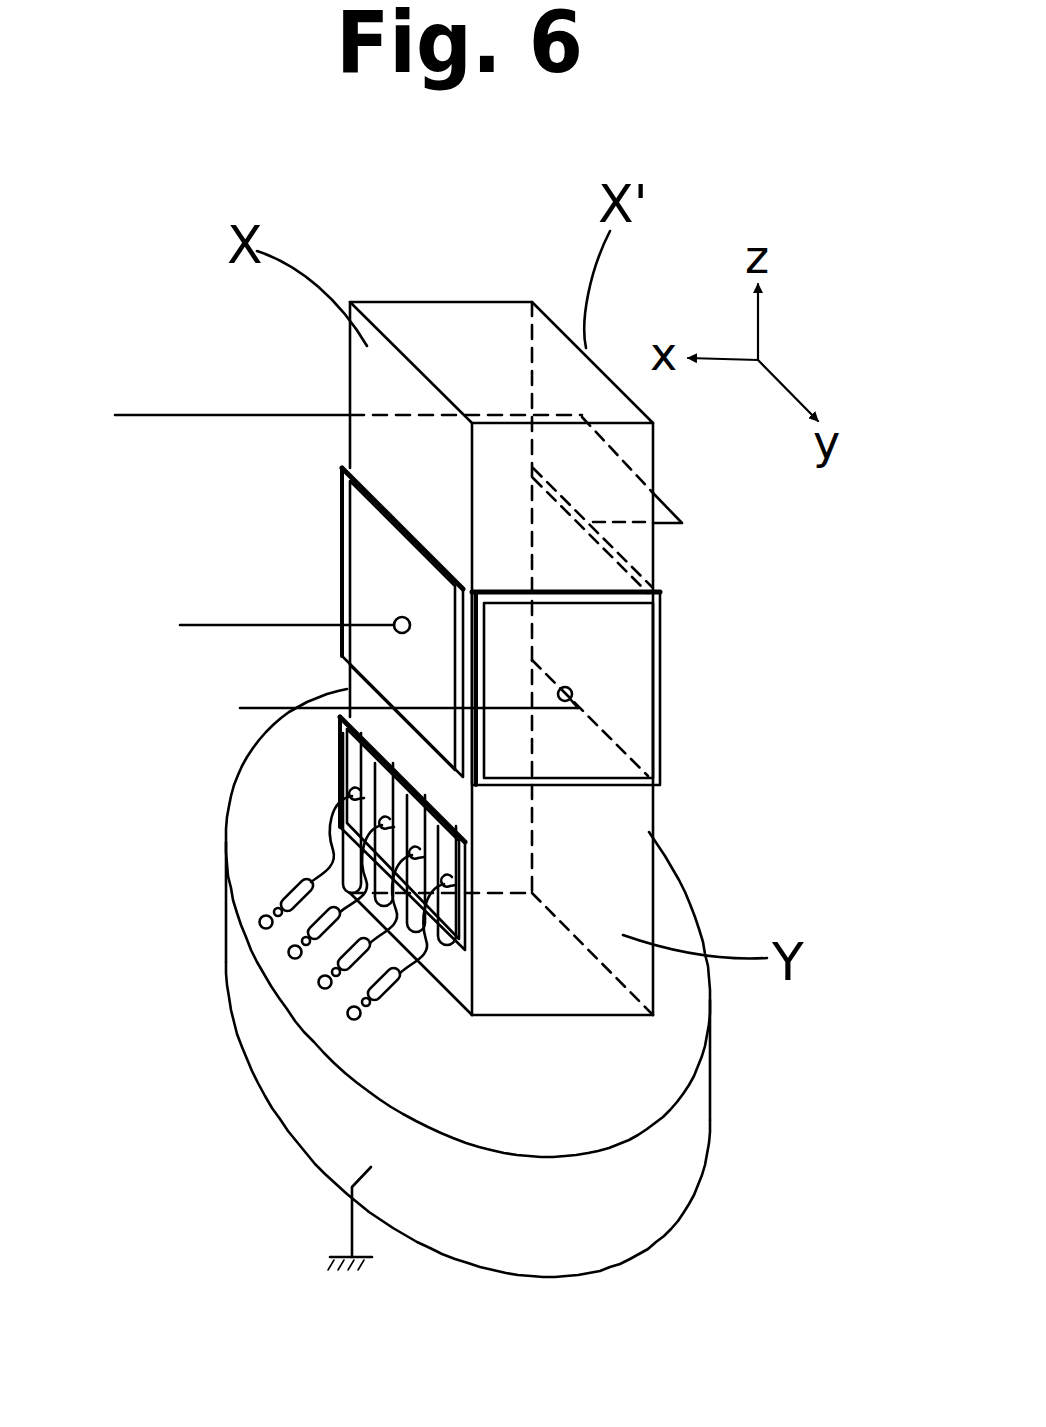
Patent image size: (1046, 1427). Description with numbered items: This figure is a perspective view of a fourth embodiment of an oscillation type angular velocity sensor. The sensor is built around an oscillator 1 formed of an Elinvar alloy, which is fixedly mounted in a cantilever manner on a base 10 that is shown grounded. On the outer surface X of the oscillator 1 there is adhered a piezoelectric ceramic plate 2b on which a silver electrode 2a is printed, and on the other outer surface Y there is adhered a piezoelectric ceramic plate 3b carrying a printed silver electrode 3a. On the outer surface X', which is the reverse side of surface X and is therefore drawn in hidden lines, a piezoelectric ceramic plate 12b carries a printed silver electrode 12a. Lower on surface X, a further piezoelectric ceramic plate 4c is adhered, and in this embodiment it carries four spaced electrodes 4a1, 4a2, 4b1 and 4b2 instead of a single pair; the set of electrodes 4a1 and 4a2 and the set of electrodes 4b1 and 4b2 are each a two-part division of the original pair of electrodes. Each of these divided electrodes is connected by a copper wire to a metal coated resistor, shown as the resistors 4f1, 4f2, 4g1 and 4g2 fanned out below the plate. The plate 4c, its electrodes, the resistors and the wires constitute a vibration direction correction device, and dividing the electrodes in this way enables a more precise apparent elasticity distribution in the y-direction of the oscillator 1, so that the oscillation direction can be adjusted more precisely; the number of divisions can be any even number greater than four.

The oscillator 1 is at (346, 393).
The silver electrode 2a is at (368, 570).
The piezoelectric ceramic plate 2b is at (342, 487).
The silver electrode 3a is at (637, 723).
The piezoelectric ceramic plate 3b is at (662, 622).
The spaced electrode 4a1 is at (343, 765).
The spaced electrode 4a2 is at (375, 814).
The spaced electrode 4b1 is at (458, 813).
The spaced electrode 4b2 is at (448, 860).
The piezoelectric ceramic plate 4c is at (470, 880).
The metal coated resistor 4f1 is at (288, 895).
The metal coated resistor 4f2 is at (300, 937).
The metal coated resistor 4g1 is at (335, 970).
The metal coated resistor 4g2 is at (368, 998).
The base 10 is at (712, 1125).
The silver electrode 12a is at (622, 578).
The piezoelectric ceramic plate 12b is at (605, 537).